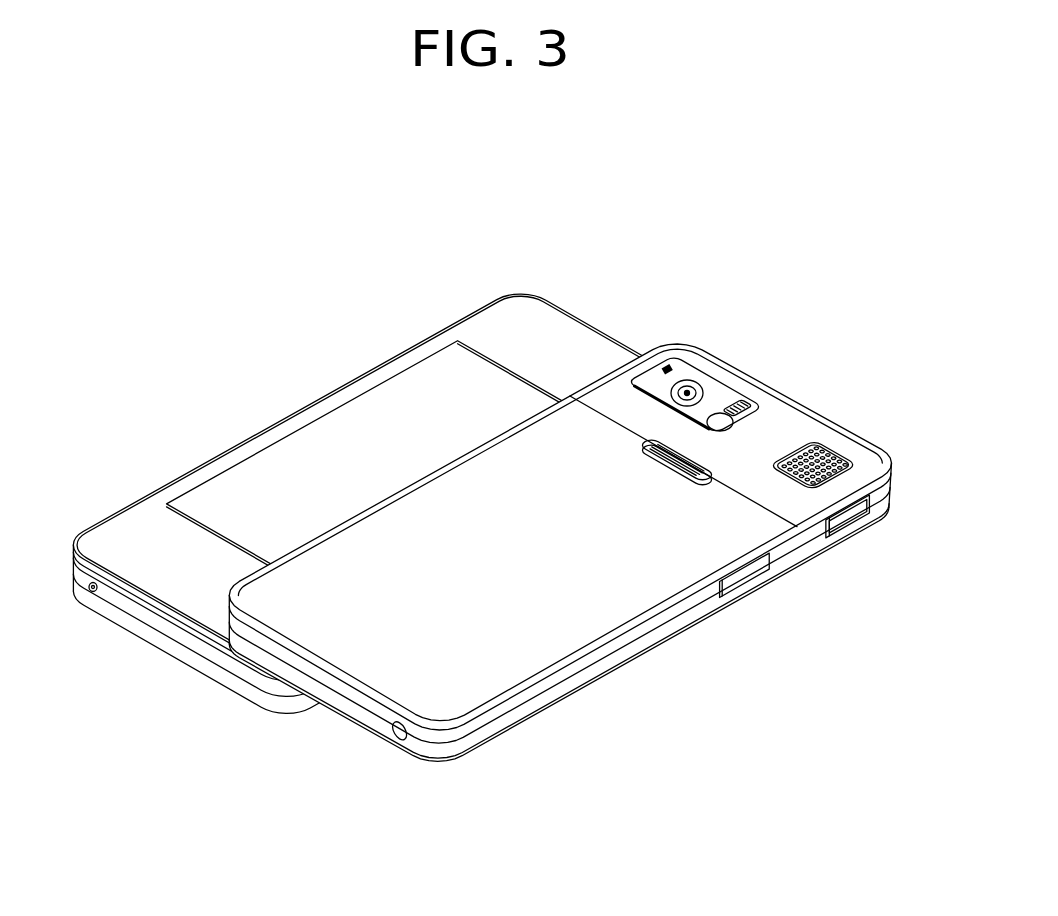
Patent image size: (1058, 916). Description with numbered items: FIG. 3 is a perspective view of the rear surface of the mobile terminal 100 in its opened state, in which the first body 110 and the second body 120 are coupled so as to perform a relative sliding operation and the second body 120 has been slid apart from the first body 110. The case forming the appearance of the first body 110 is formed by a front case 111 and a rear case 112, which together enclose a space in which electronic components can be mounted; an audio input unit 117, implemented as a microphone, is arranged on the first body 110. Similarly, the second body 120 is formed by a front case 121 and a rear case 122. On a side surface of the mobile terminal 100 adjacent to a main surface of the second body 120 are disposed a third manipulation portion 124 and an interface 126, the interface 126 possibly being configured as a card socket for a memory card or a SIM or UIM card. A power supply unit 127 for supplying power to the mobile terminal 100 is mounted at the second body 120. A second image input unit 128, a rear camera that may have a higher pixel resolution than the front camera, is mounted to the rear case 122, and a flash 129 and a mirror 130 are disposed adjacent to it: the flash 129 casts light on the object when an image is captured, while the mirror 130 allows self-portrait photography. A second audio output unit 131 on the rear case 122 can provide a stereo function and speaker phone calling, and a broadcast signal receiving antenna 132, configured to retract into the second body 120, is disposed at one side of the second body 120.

The mobile terminal 100 is at (345, 326).
The first body 110 is at (388, 507).
The front case 111 is at (197, 650).
The rear case 112 is at (167, 622).
The audio input unit 117 is at (90, 591).
The second body 120 is at (572, 545).
The front case 121 is at (623, 658).
The rear case 122 is at (572, 673).
The third manipulation portion 124 is at (740, 580).
The interface 126 is at (843, 520).
The power supply unit 127 is at (487, 690).
The second image input unit 128 is at (690, 388).
The flash 129 is at (752, 404).
The mirror 130 is at (724, 414).
The second audio output unit 131 is at (835, 452).
The broadcast signal receiving antenna 132 is at (396, 738).